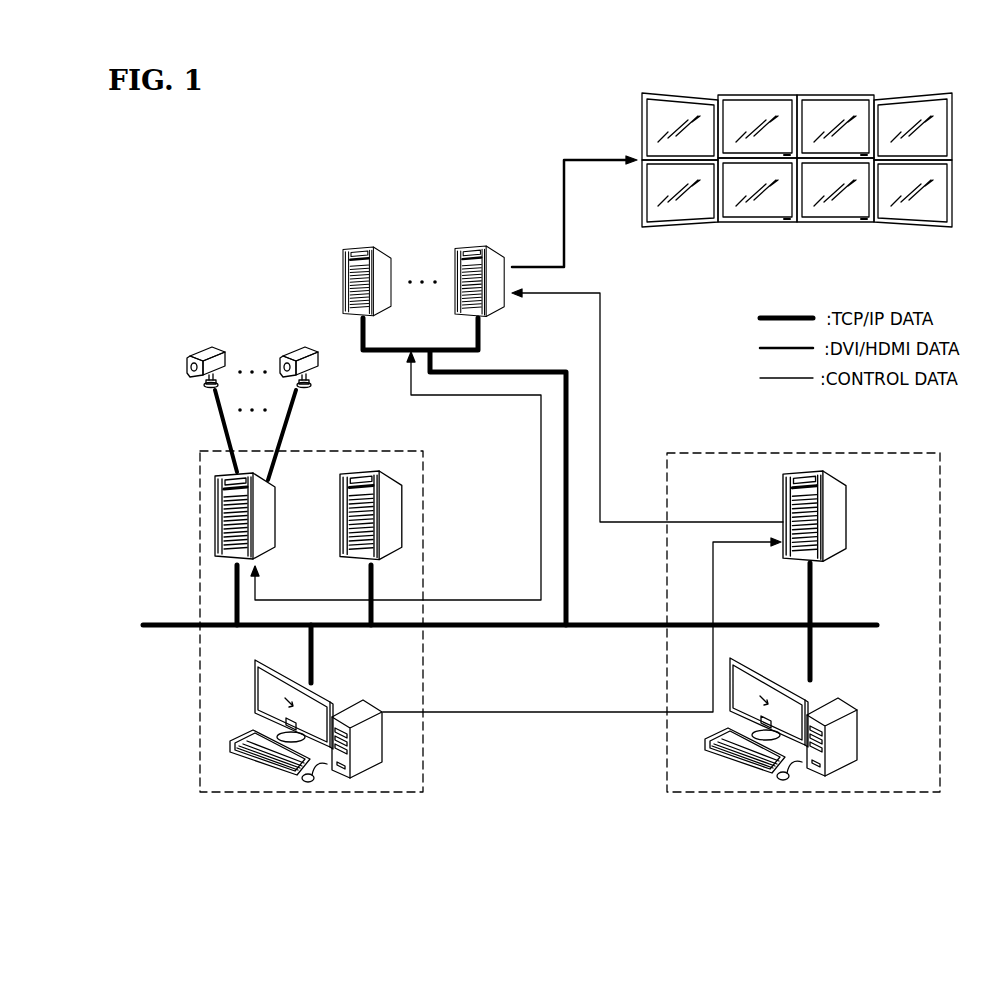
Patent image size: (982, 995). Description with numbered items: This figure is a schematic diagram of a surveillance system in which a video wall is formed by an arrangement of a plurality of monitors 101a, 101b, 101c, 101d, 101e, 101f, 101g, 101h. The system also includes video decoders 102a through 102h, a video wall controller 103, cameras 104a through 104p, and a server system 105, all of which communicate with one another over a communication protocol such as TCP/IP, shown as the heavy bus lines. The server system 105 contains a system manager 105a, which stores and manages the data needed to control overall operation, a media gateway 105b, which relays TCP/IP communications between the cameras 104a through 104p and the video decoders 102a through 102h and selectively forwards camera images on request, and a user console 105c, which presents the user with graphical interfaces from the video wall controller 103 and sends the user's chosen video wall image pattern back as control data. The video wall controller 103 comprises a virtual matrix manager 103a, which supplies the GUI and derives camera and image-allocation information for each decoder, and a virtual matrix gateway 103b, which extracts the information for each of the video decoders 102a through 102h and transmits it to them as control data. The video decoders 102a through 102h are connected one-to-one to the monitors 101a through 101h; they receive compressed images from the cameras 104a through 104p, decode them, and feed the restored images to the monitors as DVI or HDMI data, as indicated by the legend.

The monitor 101a is at (682, 93).
The monitor 101b is at (758, 97).
The monitor 101c is at (680, 227).
The monitor 101d is at (758, 222).
The monitor 101e is at (836, 97).
The monitor 101f is at (914, 93).
The monitor 101g is at (836, 222).
The monitor 101h is at (912, 227).
The video decoder 102a is at (362, 244).
The video decoder 102h is at (472, 243).
The video wall controller 103 is at (893, 452).
The virtual matrix manager 103a is at (857, 736).
The virtual matrix gateway 103b is at (847, 521).
The camera 104a is at (203, 345).
The camera 104p is at (294, 345).
The server system 105 is at (397, 452).
The system manager 105a is at (404, 521).
The media gateway 105b is at (215, 521).
The user console 105c is at (222, 660).